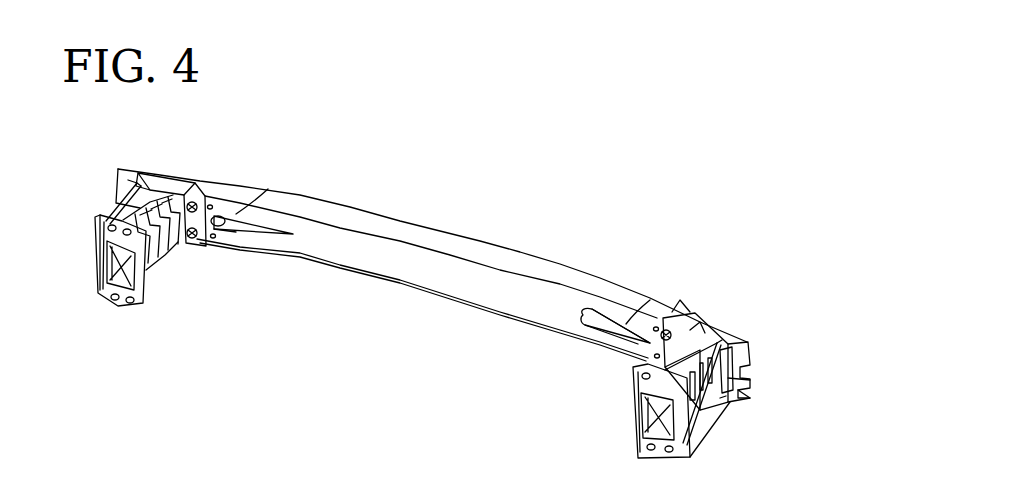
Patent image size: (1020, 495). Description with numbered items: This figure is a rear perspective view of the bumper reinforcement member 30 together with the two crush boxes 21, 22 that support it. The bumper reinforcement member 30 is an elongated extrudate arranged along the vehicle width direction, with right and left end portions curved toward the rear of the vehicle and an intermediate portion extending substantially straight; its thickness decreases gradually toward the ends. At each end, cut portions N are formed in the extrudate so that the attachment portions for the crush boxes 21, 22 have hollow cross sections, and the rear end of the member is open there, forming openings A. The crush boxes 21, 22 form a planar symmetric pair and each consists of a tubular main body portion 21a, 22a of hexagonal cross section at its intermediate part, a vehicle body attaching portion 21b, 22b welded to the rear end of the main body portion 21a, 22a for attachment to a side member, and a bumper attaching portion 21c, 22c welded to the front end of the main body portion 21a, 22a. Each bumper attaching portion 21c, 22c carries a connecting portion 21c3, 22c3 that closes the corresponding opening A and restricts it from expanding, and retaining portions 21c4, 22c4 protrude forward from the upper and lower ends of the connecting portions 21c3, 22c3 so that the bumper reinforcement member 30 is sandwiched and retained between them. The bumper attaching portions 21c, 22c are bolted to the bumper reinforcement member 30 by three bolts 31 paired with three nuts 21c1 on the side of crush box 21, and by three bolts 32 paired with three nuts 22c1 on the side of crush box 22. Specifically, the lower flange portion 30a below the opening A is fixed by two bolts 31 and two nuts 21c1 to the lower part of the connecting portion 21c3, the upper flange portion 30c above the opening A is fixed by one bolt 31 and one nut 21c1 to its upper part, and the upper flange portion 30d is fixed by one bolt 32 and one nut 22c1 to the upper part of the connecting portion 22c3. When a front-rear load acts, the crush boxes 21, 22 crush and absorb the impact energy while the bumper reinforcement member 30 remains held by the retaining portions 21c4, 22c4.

The bumper reinforcement member 30 is at (427, 222).
The lower flange portion 30a is at (748, 396).
The upper flange portion 30c is at (751, 363).
The upper flange portion 30d is at (112, 193).
The bolt 31 is at (661, 320).
The bolt 32 is at (188, 200).
The crush box 21 is at (699, 347).
The main body portion 21a is at (710, 347).
The vehicle body attaching portion 21b is at (639, 437).
The bumper attaching portion 21c is at (727, 337).
The nut 21c1 is at (659, 325).
The connecting portion 21c3 is at (740, 381).
The retaining portion 21c4 is at (724, 346).
The crush box 22 is at (154, 236).
The main body portion 22a is at (157, 266).
The vehicle body attaching portion 22b is at (111, 304).
The bumper attaching portion 22c is at (154, 202).
The nut 22c1 is at (203, 204).
The connecting portion 22c3 is at (132, 190).
The retaining portion 22c4 is at (140, 183).
The opening A is at (232, 207).
The cut portion N is at (252, 212).